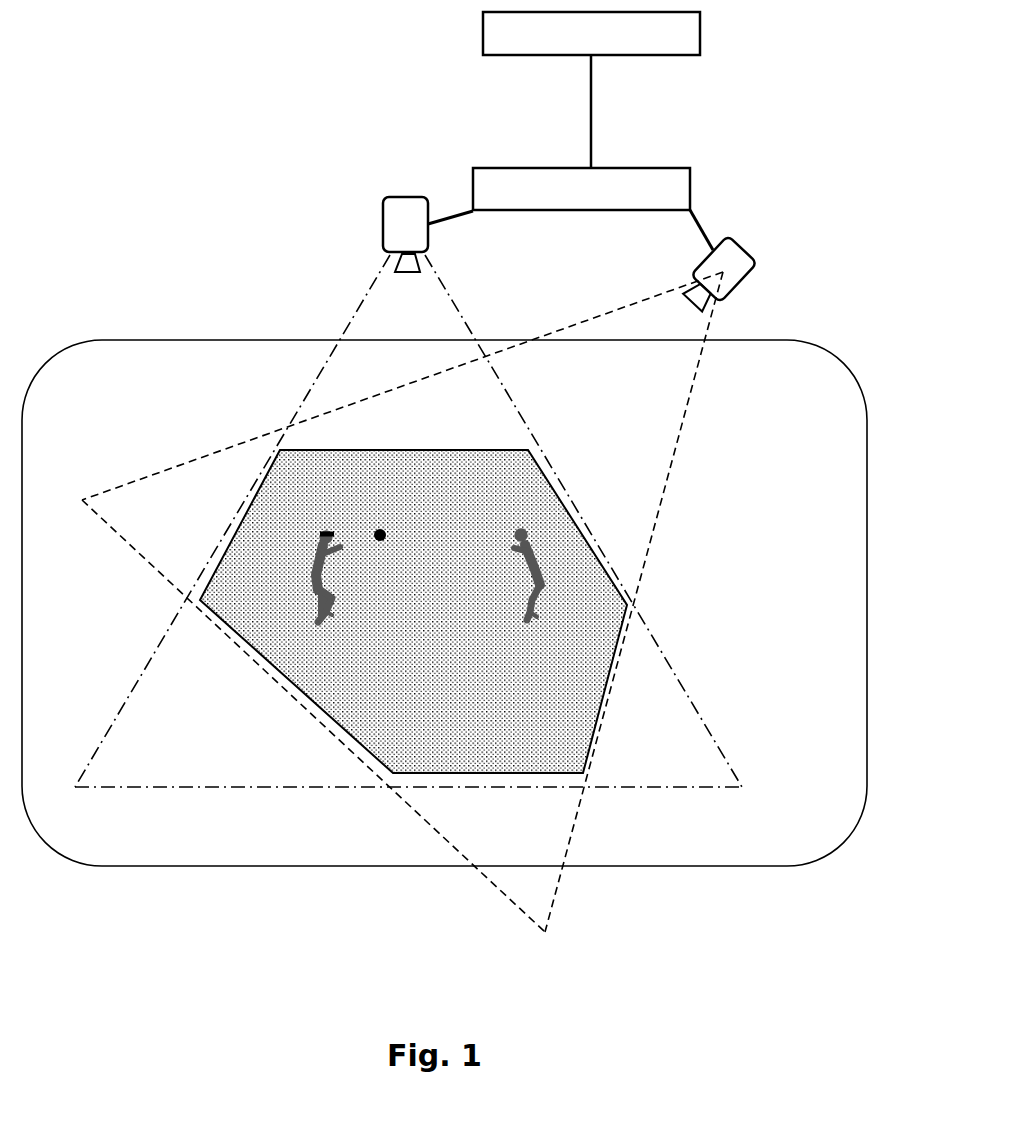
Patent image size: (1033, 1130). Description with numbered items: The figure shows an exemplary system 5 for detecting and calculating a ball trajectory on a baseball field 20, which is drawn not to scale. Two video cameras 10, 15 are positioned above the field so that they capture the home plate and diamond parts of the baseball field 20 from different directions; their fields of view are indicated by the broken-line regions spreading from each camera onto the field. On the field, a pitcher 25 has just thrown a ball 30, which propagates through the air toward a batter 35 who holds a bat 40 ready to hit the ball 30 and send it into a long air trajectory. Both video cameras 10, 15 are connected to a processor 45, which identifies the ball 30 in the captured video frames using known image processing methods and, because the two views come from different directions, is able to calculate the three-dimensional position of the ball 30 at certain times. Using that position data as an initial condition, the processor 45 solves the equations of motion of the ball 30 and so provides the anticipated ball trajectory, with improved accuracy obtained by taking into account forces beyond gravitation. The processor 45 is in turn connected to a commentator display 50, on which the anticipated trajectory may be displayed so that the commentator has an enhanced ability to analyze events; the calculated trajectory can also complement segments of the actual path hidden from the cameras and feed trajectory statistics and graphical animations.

The system 5 is at (284, 97).
The video camera 10 is at (383, 222).
The video camera 15 is at (745, 245).
The baseball field 20 is at (178, 341).
The pitcher 25 is at (553, 548).
The ball 30 is at (384, 541).
The batter 35 is at (318, 558).
The bat 40 is at (313, 533).
The processor 45 is at (581, 189).
The commentator display 50 is at (591, 33).